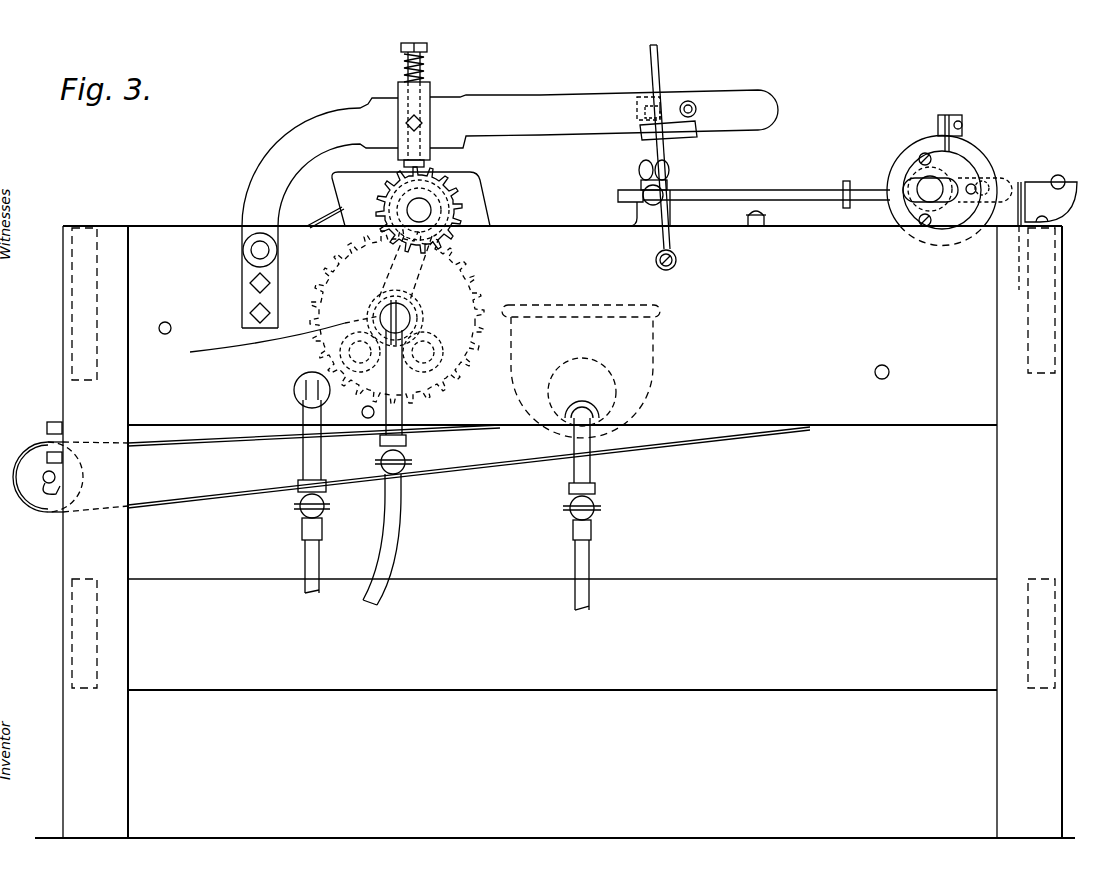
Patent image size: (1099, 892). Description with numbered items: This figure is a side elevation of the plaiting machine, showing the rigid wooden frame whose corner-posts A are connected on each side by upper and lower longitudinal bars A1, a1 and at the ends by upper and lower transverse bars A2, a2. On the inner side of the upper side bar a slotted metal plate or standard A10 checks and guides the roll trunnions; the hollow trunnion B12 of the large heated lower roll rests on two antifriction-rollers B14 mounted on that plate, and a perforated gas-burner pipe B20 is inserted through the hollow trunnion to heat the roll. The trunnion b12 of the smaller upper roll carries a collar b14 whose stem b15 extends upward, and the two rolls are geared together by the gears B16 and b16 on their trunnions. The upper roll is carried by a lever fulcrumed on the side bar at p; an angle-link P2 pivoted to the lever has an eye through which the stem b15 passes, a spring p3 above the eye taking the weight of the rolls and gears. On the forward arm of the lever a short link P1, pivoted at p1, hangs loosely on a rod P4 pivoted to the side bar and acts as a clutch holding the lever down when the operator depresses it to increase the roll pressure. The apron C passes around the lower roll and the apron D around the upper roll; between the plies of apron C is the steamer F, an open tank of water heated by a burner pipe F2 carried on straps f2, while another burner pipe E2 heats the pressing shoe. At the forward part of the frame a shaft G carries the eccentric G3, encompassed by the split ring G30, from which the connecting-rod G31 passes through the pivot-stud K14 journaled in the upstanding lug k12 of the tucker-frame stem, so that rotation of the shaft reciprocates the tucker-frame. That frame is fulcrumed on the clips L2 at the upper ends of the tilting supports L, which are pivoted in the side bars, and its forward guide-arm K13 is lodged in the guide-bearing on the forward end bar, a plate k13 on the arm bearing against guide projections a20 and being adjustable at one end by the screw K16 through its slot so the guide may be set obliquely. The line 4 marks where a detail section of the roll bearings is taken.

The corner-post A is at (1000, 527).
The upper longitudinal bar A1 is at (524, 349).
The upper transverse bar A2 is at (75, 325).
The lower longitudinal bar a1 is at (780, 688).
The lower transverse bar a2 is at (72, 660).
The metal plate or standard A10 is at (340, 184).
The apron D is at (316, 214).
The short link P1 is at (675, 133).
The angle-link P2 is at (428, 90).
The spring p3 is at (402, 71).
The stem b15 is at (400, 45).
The section line 4 is at (412, 36).
The rod P4 is at (659, 56).
The pivot p1 is at (693, 105).
The fulcrum p is at (258, 251).
The tilting support L is at (559, 96).
The clip L2 is at (772, 221).
The pivot-stud K14 is at (650, 192).
The upstanding lug k12 is at (636, 218).
The guide-arm K13 is at (1040, 200).
The guide plate k13 is at (1026, 186).
The screw K16 is at (1060, 175).
The connecting-rod G31 is at (740, 190).
The eccentric ring G30 is at (915, 150).
The eccentric-plate G3 is at (961, 160).
The shaft G is at (920, 186).
The guide projection a20 is at (1018, 210).
The trunnion b12 is at (414, 207).
The collar b14 is at (460, 196).
The gear b16 is at (450, 222).
The gear B16 is at (470, 290).
The hollow trunnion B12 is at (402, 315).
The antifriction-roller B14 is at (340, 356).
The fuel-gas burner B20 is at (276, 340).
The fuel-gas burner E2 is at (305, 393).
The fuel-gas burner F2 is at (590, 420).
The strap f2 is at (596, 456).
The steamer F is at (548, 433).
The apron C is at (193, 444).